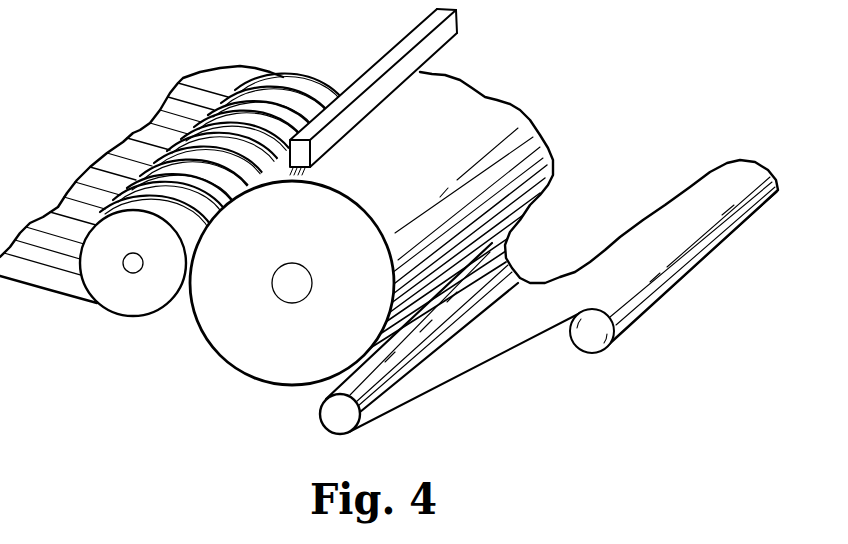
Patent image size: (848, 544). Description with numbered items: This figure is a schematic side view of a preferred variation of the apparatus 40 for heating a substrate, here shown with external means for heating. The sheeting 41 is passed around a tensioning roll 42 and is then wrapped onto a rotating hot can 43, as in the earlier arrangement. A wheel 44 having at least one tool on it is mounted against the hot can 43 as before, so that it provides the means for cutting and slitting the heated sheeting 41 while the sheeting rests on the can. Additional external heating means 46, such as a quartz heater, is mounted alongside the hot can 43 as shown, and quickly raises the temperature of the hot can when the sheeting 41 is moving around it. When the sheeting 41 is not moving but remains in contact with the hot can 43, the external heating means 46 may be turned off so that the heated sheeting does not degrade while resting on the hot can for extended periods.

The sealing station 40 is at (183, 377).
The sheeting 41 is at (577, 280).
The tensioning roll 42 is at (340, 415).
The hot can 43 is at (318, 372).
The wheel 44 is at (113, 288).
The external heating means 46 is at (440, 37).